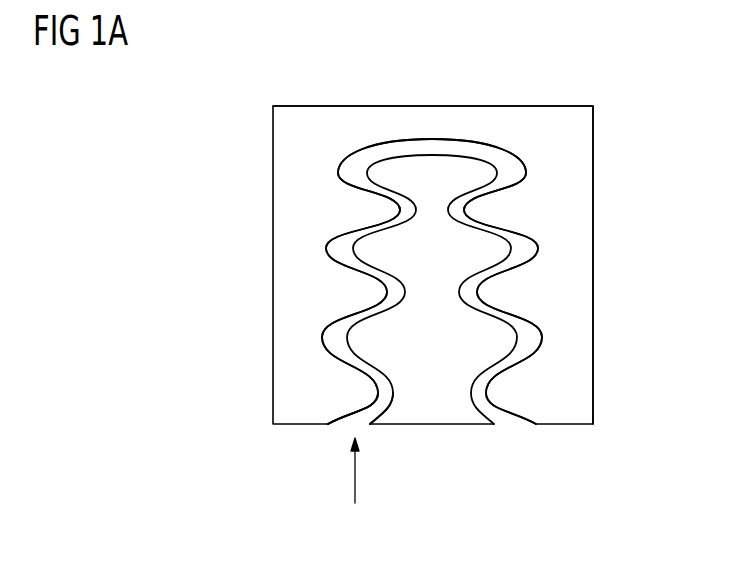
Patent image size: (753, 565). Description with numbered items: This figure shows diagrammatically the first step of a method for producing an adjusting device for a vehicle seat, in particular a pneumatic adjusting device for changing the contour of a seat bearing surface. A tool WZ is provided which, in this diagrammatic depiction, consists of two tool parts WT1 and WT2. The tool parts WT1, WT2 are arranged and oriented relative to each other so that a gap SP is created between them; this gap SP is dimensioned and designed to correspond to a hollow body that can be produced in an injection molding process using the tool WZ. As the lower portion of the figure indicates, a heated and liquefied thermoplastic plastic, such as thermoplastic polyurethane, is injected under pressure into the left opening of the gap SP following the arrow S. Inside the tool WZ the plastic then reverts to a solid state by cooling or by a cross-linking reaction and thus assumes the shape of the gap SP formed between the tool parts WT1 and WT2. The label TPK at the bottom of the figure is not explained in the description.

The tool WZ is at (533, 105).
The tool part WT1 is at (584, 231).
The tool part WT2 is at (437, 403).
The arrow S is at (432, 316).
The gap SP is at (358, 422).
The tool center point / direction TPK is at (354, 487).